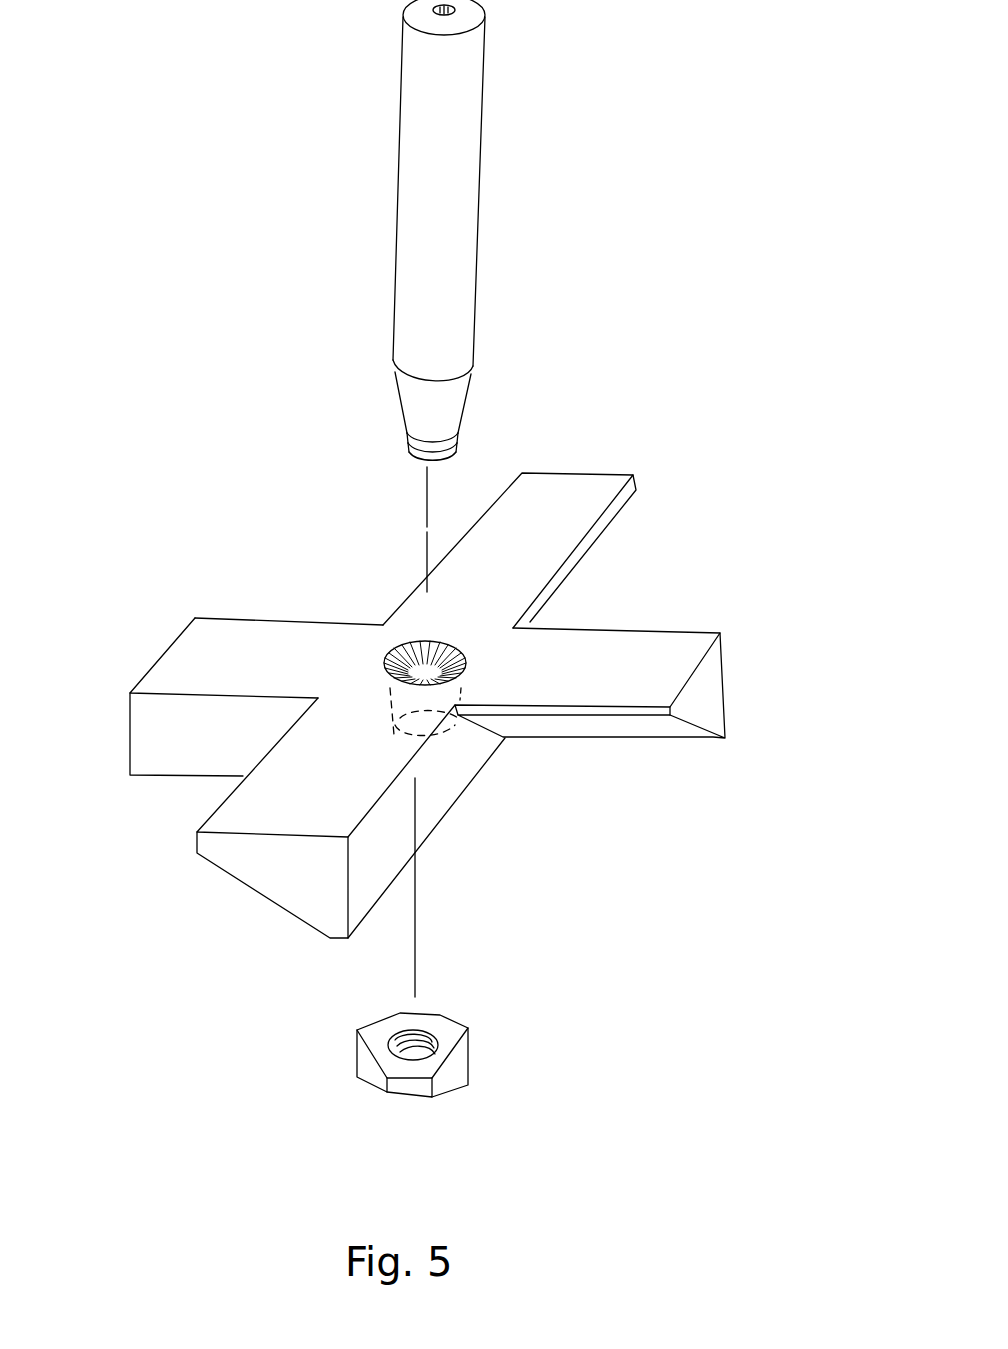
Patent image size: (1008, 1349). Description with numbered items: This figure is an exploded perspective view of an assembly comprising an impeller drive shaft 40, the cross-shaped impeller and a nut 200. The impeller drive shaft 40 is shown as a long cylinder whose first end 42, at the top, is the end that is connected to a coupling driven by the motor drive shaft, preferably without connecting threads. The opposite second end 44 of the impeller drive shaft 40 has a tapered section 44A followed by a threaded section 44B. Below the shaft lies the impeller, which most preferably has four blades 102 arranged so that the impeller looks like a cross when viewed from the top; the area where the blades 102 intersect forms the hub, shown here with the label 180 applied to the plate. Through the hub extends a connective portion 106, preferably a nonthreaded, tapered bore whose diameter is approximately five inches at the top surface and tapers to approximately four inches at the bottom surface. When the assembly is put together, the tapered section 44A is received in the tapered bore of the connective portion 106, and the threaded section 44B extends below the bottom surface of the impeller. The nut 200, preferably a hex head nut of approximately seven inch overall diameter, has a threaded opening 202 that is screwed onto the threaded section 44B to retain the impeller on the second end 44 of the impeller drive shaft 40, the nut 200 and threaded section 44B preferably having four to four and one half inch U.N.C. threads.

The impeller drive shaft 40 is at (489, 230).
The first end 42 is at (487, 12).
The second end 44 is at (489, 381).
The tapered section 44A is at (463, 408).
The threaded section 44B is at (480, 436).
The blades 102 is at (637, 487).
The connective portion 106 is at (460, 688).
The cross-shaped plate 180 is at (420, 690).
The nut 200 is at (443, 1065).
The threaded opening 202 is at (398, 1052).